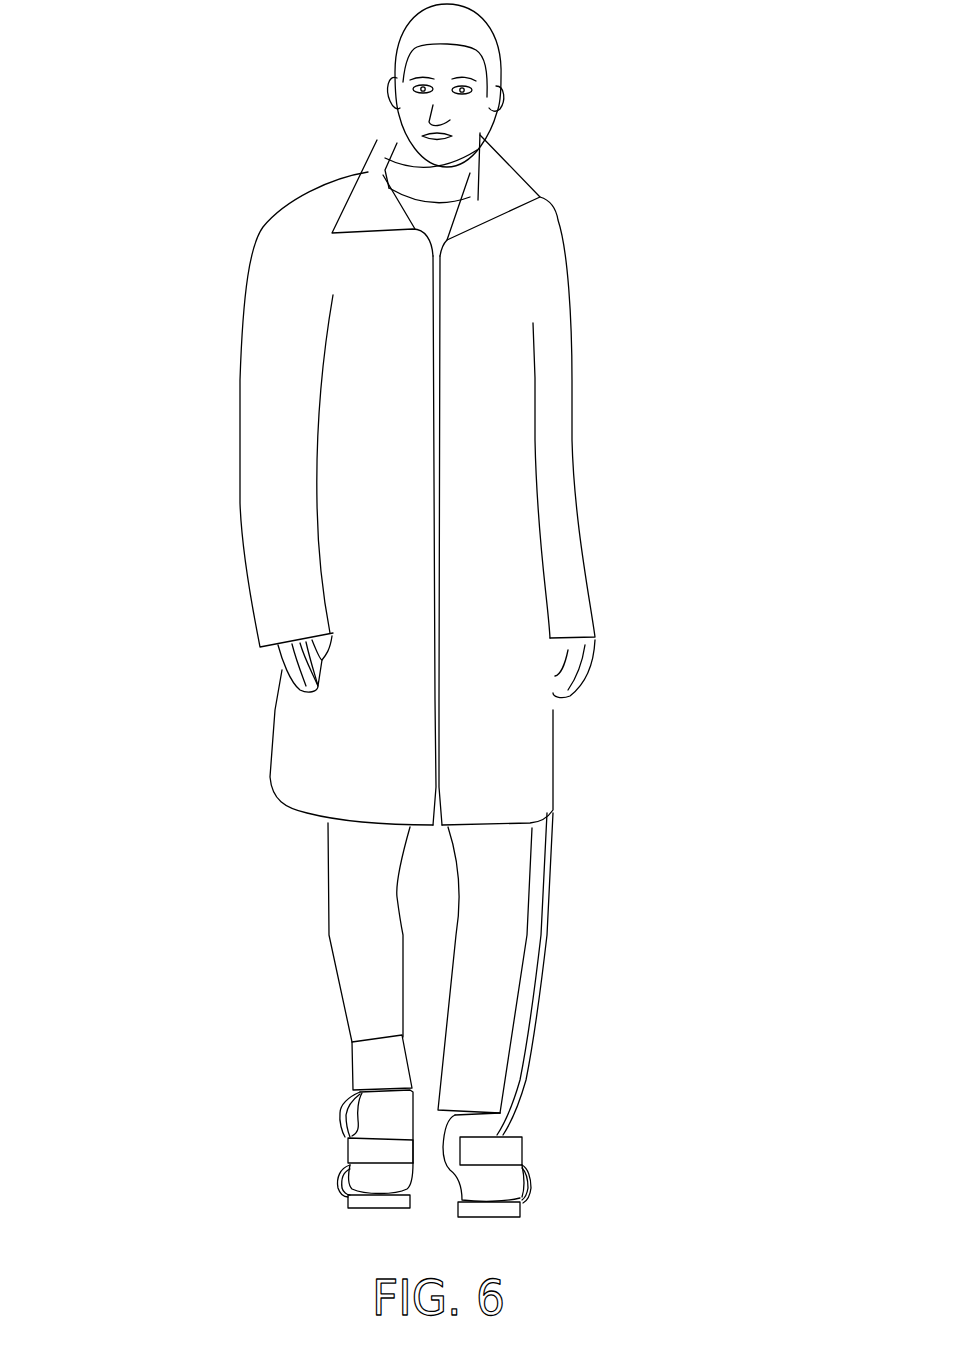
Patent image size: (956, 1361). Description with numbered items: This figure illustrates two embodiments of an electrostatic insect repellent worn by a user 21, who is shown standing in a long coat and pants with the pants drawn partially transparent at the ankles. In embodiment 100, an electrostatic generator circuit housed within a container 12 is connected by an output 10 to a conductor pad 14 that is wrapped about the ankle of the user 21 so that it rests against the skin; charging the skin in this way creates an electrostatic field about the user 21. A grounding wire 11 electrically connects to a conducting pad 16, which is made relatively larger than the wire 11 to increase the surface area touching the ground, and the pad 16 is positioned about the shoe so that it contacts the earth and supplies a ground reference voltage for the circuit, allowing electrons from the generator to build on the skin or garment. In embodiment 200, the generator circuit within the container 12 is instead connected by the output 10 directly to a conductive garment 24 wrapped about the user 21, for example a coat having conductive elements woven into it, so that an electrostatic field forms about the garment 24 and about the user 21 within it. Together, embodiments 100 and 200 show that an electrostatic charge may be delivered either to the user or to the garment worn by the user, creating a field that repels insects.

The output 10 is at (545, 935).
The grounding wire 11 is at (340, 1176).
The container 12 is at (380, 1150).
The conductor pad 14 is at (375, 1065).
The conducting pad 16 is at (373, 1200).
The user 21 is at (397, 39).
The conductive garment 24 is at (572, 360).
The embodiment 100 is at (168, 977).
The embodiment 200 is at (690, 963).